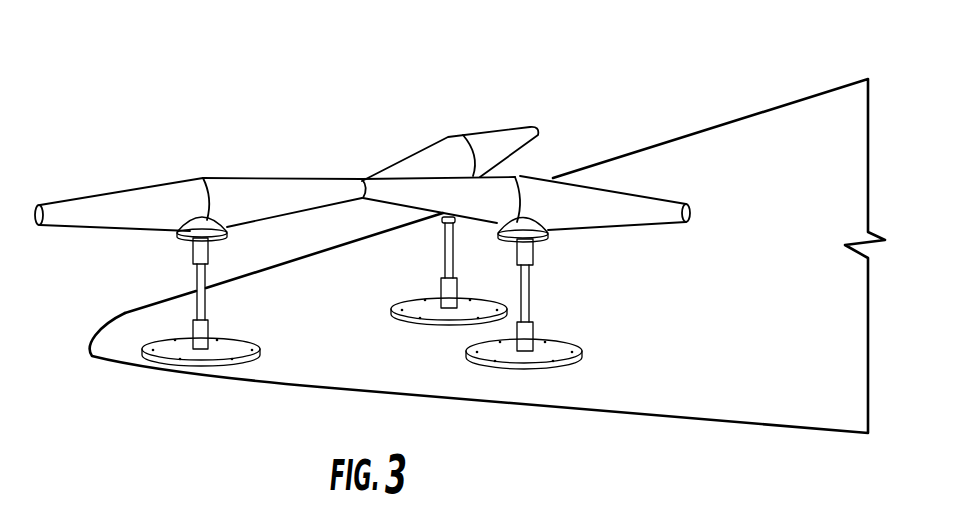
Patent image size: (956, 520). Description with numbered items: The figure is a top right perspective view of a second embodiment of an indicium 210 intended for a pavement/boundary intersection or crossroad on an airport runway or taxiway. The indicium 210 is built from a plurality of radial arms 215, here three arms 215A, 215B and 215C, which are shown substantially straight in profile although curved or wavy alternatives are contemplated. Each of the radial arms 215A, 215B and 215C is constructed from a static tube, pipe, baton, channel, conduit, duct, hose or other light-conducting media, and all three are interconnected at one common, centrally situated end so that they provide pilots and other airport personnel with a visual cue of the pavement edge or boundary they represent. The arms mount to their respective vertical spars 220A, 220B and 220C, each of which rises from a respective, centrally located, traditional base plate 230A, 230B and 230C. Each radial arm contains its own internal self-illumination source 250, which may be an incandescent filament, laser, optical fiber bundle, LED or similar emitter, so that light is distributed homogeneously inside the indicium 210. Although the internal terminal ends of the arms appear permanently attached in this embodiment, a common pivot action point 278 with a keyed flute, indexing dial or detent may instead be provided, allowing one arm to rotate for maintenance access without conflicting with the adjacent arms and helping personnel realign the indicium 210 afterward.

The indicium 210 is at (688, 195).
The radial arms 215 is at (371, 140).
The first radial arm 215A is at (207, 187).
The second radial arm 215B is at (425, 145).
The third radial arm 215C is at (610, 227).
The first vertical spar 220A is at (193, 286).
The second vertical spar 220B is at (440, 256).
The third vertical spar 220C is at (527, 303).
The first base plate 230A is at (157, 340).
The second base plate 230B is at (390, 304).
The third base plate 230C is at (470, 350).
The internal self-illumination source 250 is at (463, 137).
The common pivot action point 278 is at (537, 242).